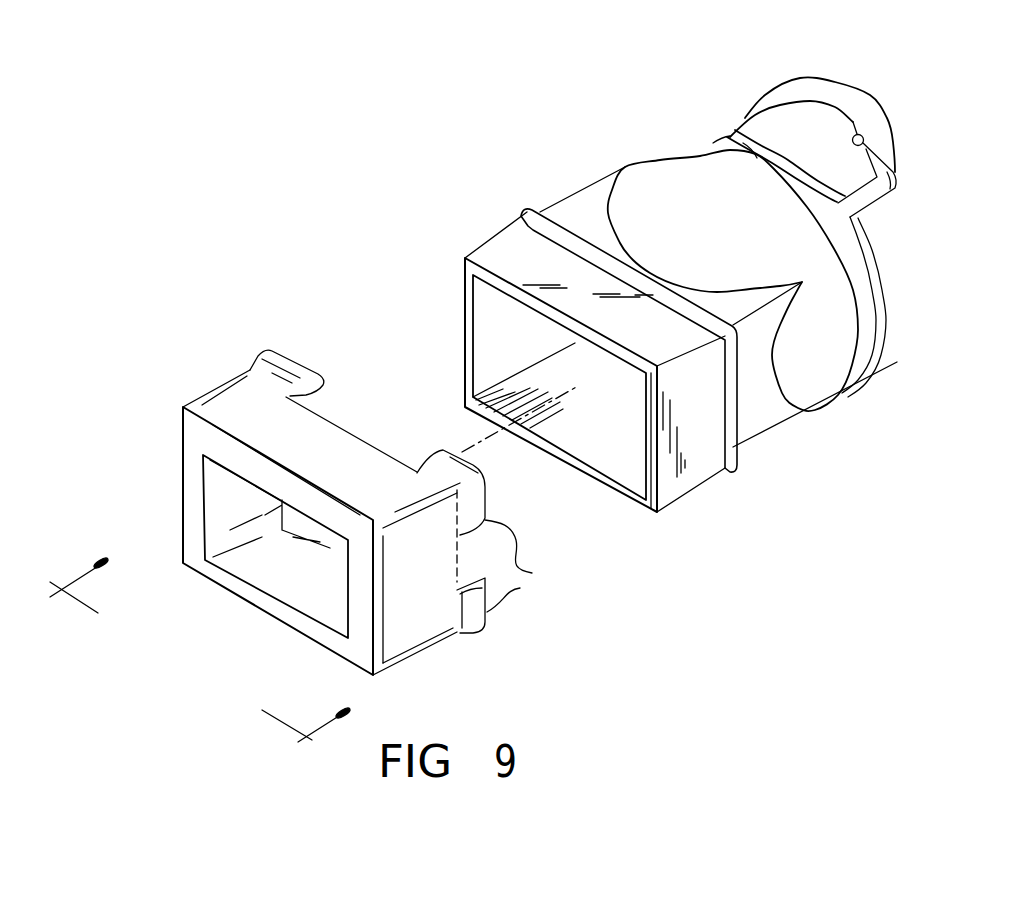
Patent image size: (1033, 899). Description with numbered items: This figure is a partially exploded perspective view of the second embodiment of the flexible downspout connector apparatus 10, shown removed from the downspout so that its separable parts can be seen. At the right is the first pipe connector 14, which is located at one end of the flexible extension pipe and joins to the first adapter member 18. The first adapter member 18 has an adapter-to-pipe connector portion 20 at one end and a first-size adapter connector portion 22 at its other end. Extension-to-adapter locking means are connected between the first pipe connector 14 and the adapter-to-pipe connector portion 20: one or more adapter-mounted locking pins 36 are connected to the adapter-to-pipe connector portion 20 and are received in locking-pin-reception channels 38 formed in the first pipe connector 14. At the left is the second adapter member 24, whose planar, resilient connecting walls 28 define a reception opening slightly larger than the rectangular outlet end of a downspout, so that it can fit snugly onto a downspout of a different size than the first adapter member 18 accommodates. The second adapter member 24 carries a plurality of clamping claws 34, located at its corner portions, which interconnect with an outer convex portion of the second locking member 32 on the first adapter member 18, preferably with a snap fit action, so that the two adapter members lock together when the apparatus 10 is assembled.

The flexible downspout connector apparatus 10 is at (202, 647).
The first pipe connector 14 is at (812, 137).
The first adapter member 18 is at (571, 178).
The adapter-to-pipe connector portion 20 is at (737, 135).
The first-size adapter connector portion 22 is at (701, 463).
The second adapter member 24 is at (203, 376).
The planar, resilient connecting walls 28 is at (300, 578).
The second locking member 32 is at (740, 452).
The clamping claws 34 is at (292, 350).
The adapter-mounted locking pins 36 is at (847, 115).
The locking-pin-reception channels 38 is at (880, 120).